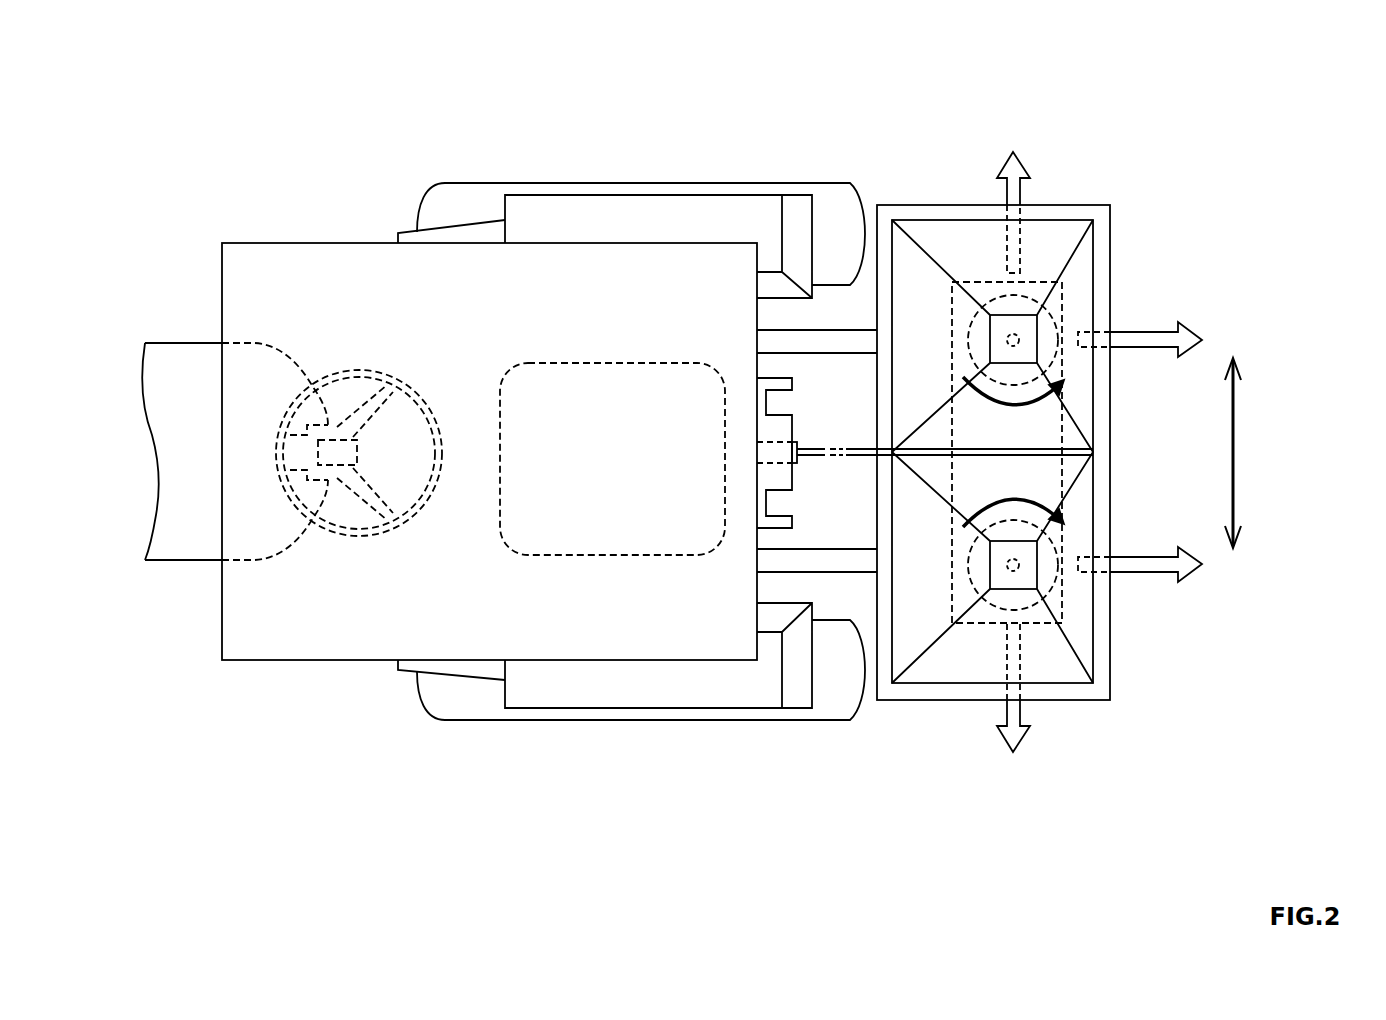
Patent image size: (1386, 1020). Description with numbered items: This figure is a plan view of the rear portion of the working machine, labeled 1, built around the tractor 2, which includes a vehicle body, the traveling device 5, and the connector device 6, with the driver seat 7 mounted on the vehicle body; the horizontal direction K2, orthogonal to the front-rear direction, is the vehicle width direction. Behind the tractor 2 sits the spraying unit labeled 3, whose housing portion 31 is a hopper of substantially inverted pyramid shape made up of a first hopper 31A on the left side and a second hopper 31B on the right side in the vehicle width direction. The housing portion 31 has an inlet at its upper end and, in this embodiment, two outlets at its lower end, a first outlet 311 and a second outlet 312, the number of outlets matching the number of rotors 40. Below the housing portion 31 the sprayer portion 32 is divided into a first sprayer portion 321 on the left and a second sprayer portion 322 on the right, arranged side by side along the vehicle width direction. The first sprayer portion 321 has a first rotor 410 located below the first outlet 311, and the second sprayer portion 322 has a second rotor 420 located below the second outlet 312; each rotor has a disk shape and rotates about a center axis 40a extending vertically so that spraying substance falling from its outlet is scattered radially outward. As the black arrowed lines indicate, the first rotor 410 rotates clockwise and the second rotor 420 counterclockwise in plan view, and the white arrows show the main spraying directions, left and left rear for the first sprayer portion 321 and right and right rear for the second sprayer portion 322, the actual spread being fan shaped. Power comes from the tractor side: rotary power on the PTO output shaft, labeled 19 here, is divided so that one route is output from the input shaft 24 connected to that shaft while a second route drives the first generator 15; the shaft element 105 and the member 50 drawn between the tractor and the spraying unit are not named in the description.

The drive unit 1 is at (841, 415).
The tractor 2 is at (330, 228).
The transmission unit 3 is at (1074, 441).
The traveling device 5 is at (708, 163).
The connector device 6 is at (843, 577).
The driver seat 7 is at (625, 555).
The first generator 15 is at (792, 427).
The bearing holder 19 is at (757, 455).
The input shaft 24 is at (798, 458).
The propeller shaft 105 is at (835, 455).
The housing portion 31 is at (1017, 461).
The first hopper 31A is at (988, 670).
The second hopper 31B is at (953, 237).
The first outlet 311 is at (990, 563).
The second outlet 312 is at (1037, 330).
The sprayer portion 32 is at (1019, 439).
The first sprayer portion 321 is at (1030, 610).
The second sprayer portion 322 is at (1000, 293).
The rotor 40 is at (1069, 379).
The first rotor 410 is at (1037, 565).
The second rotor 420 is at (1037, 315).
The center axis 40a is at (1013, 338).
The motor 50 is at (952, 565).
The horizontal direction K2 is at (1237, 472).